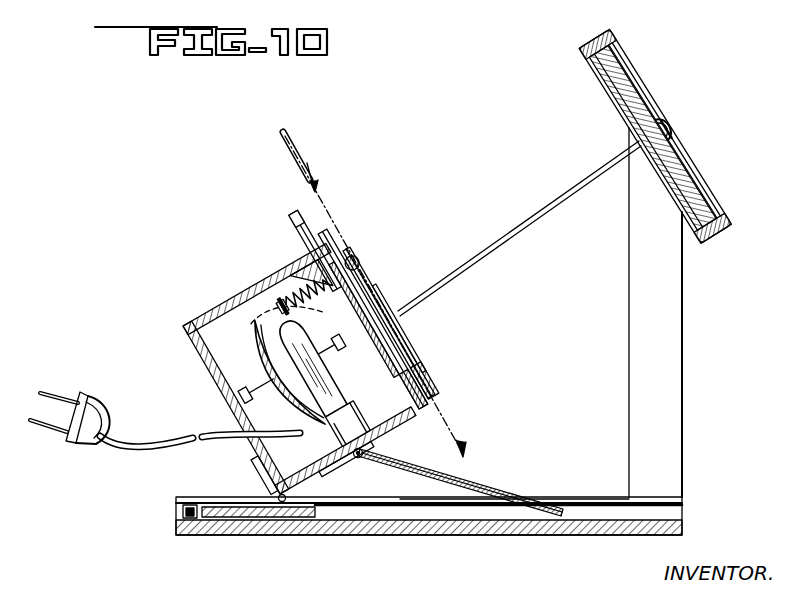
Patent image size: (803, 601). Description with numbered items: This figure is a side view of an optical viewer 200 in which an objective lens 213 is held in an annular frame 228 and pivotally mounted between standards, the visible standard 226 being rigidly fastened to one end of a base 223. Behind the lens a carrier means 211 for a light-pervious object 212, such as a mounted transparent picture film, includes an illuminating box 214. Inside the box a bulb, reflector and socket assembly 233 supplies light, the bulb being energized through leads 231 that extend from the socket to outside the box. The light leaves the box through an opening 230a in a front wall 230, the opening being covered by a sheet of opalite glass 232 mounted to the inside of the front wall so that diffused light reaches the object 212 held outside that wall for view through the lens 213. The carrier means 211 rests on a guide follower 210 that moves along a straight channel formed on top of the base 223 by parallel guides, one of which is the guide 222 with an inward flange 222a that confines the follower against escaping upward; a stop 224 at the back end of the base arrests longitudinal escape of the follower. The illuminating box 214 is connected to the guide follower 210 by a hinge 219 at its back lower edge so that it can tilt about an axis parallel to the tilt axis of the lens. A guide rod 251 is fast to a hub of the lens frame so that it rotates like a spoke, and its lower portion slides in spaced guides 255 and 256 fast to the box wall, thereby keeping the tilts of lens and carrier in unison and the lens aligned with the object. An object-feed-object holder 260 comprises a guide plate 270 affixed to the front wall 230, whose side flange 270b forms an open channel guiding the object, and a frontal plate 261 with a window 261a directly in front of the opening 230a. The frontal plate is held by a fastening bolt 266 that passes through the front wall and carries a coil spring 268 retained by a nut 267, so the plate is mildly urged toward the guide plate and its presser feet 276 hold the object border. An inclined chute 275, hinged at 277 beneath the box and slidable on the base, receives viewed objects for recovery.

The optical viewer 200 is at (449, 160).
The guide follower 210 is at (243, 536).
The carrier means 211 is at (203, 300).
The light-pervious object 212 is at (300, 146).
The objective lens 213 is at (640, 82).
The illuminating box 214 is at (200, 317).
The hinge 219 is at (266, 470).
The guide 222 is at (665, 513).
The flange 222a is at (660, 497).
The base 223 is at (404, 536).
The stop 224 is at (183, 511).
The standard 226 is at (672, 346).
The annular frame 228 is at (595, 57).
The front wall 230 is at (684, 132).
The opening 230a is at (405, 352).
The leads 231 is at (143, 446).
The sheet of opalite glass 232 is at (672, 128).
The bulb, reflector and socket assembly 233 is at (292, 340).
The guide rod 251 is at (526, 214).
The guide 255 is at (244, 392).
The guide 256 is at (292, 322).
The object-feed-object holder 260 is at (360, 249).
The frontal plate 261 is at (345, 243).
The window 261a is at (400, 315).
The fastening bolt 266 is at (362, 265).
The nut 267 is at (290, 265).
The coil spring 268 is at (288, 293).
The guide plate 270 is at (292, 229).
The flange 270b is at (312, 218).
The chute 275 is at (497, 487).
The presser foot 276 is at (322, 230).
The hinge 277 is at (359, 460).